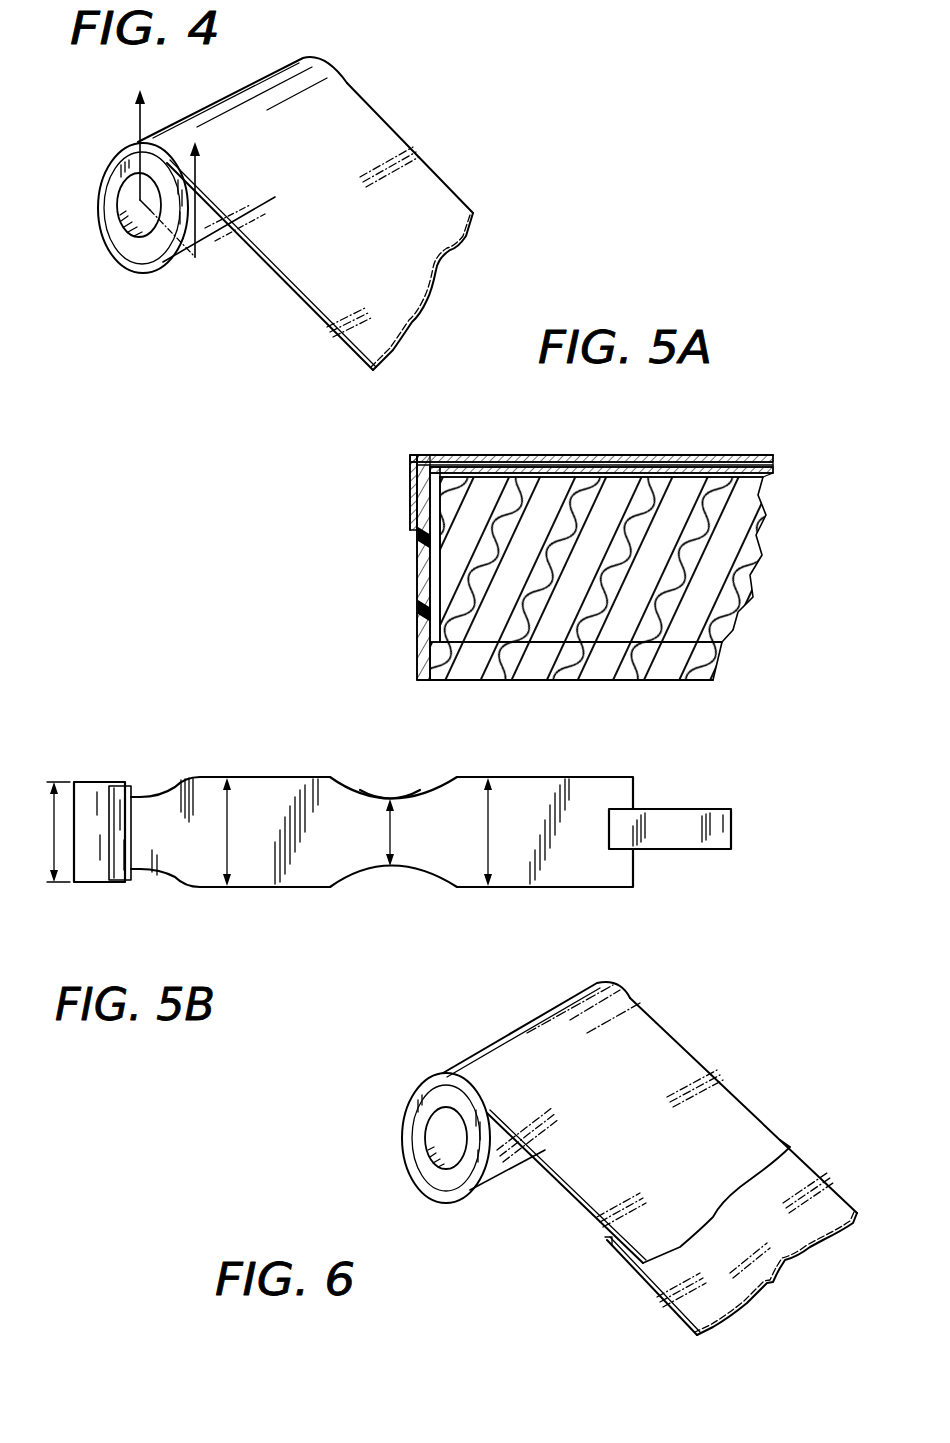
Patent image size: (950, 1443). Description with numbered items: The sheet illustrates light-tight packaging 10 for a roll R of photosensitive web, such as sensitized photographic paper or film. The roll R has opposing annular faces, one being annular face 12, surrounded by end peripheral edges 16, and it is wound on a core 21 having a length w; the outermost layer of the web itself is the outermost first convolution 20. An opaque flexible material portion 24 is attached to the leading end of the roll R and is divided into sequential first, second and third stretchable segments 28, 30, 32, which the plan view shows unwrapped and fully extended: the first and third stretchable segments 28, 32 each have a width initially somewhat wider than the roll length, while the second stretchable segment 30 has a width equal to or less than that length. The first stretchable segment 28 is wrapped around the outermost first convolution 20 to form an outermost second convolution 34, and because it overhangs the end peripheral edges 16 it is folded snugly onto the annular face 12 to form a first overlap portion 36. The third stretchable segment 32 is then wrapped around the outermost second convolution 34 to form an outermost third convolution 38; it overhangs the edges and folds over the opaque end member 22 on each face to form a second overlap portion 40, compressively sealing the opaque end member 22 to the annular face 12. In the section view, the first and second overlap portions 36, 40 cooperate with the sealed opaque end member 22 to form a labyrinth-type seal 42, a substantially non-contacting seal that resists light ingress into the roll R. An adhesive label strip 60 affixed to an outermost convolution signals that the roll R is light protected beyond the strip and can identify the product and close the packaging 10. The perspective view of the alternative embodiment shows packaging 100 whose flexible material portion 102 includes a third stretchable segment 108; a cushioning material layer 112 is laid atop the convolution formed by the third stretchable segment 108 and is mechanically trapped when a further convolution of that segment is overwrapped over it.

In FIG. 4, the light-tight packaging 10 is at (478, 100).
In FIG. 5B, the light-tight packaging 10 is at (187, 708).
In FIG. 5A, the annular face 12 is at (427, 632).
In FIG. 5A, the end peripheral edge 16 is at (453, 480).
In FIG. 4, the outermost first convolution 20 is at (108, 163).
In FIG. 5A, the outermost first convolution 20 is at (572, 487).
In FIG. 5A, the core 21 is at (717, 664).
In FIG. 4, the opaque end member 22 is at (108, 211).
In FIG. 5A, the opaque end member 22 is at (425, 583).
In FIG. 4, the flexible material portion 24 is at (385, 114).
In FIG. 5A, the flexible material portion 24 is at (830, 438).
In FIG. 5B, the flexible material portion 24 is at (207, 782).
In FIG. 5A, the first stretchable segment 28 is at (778, 475).
In FIG. 5B, the first stretchable segment 28 is at (268, 804).
In FIG. 5A, the second stretchable segment 30 is at (780, 460).
In FIG. 5B, the second stretchable segment 30 is at (364, 804).
In FIG. 4, the third stretchable segment 32 is at (460, 195).
In FIG. 5A, the third stretchable segment 32 is at (762, 456).
In FIG. 5B, the third stretchable segment 32 is at (517, 797).
In FIG. 5A, the outermost second convolution 34 is at (500, 462).
In FIG. 5A, the first overlap portion 36 is at (410, 550).
In FIG. 4, the outermost third convolution 38 is at (337, 107).
In FIG. 4, the second overlap portion 40 is at (111, 186).
In FIG. 5A, the second overlap portion 40 is at (410, 513).
In FIG. 5A, the labyrinth-type seal 42 is at (403, 450).
In FIG. 5B, the adhesive label strip 60 is at (675, 806).
In FIG. 6, the packaging 100 is at (755, 1018).
In FIG. 6, the flexible material portion 102 is at (672, 1053).
In FIG. 6, the third stretchable segment 108 is at (738, 1110).
In FIG. 6, the cushioning material layer 112 is at (836, 1134).
In FIG. 4, the photosensitive web roll R is at (217, 240).
In FIG. 5A, the photosensitive web roll R is at (723, 593).